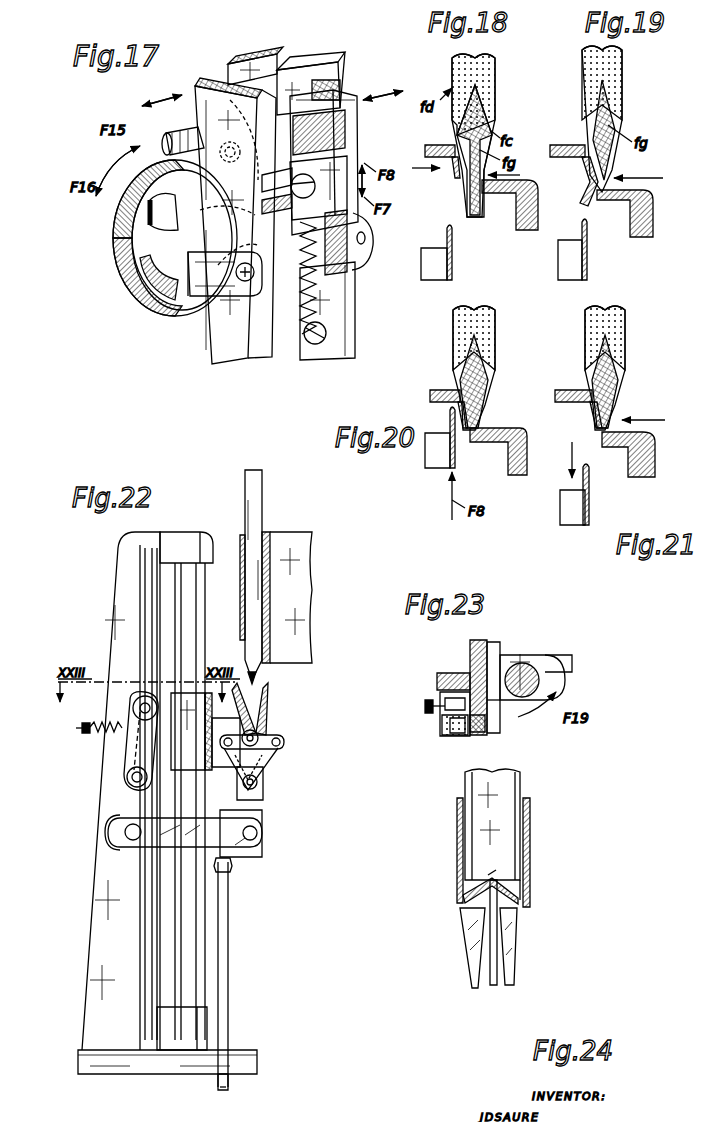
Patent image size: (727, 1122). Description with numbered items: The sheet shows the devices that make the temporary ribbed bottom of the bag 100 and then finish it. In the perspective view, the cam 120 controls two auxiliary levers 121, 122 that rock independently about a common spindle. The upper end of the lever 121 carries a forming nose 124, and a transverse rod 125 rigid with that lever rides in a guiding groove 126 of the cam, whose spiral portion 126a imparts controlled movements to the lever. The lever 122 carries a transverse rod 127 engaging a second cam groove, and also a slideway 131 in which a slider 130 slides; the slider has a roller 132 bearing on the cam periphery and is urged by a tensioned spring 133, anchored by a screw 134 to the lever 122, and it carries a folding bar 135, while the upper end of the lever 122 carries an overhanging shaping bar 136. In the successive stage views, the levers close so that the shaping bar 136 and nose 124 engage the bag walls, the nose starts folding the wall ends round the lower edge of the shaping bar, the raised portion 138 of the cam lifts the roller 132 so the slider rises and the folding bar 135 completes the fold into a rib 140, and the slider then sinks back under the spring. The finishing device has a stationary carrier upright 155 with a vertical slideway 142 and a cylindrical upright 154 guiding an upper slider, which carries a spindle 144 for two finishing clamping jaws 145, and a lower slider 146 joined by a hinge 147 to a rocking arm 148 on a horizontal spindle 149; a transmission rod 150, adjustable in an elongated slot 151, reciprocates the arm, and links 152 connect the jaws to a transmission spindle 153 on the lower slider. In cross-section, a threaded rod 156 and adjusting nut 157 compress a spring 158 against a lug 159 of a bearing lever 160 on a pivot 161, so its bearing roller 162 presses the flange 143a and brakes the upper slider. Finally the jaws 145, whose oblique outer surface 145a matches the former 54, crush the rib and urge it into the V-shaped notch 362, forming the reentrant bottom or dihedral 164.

In FIG. 17, the cam 120 is at (196, 322).
In FIG. 17, the lever 121 is at (213, 363).
In FIG. 17, the lever 122 is at (333, 343).
In FIG. 17, the forming nose 124 is at (260, 102).
In FIG. 18, the forming nose 124 is at (505, 195).
In FIG. 20, the forming nose 124 is at (505, 425).
In FIG. 17, the transverse rod 125 is at (150, 297).
In FIG. 17, the guiding groove 126 is at (175, 307).
In FIG. 17, the spiral portion 126a is at (150, 252).
In FIG. 17, the transverse rod 127 is at (278, 220).
In FIG. 17, the slider 130 is at (344, 153).
In FIG. 17, the slideway 131 is at (353, 132).
In FIG. 17, the roller 132 is at (173, 131).
In FIG. 17, the tensioned spring 133 is at (327, 293).
In FIG. 17, the screw 134 is at (313, 344).
In FIG. 18, the folding bar 135 is at (452, 238).
In FIG. 19, the folding bar 135 is at (588, 234).
In FIG. 20, the folding bar 135 is at (456, 458).
In FIG. 21, the folding bar 135 is at (590, 462).
In FIG. 17, the shaping bar 136 is at (232, 65).
In FIG. 18, the shaping bar 136 is at (455, 172).
In FIG. 19, the shaping bar 136 is at (588, 163).
In FIG. 20, the shaping bar 136 is at (455, 396).
In FIG. 21, the shaping bar 136 is at (585, 396).
In FIG. 17, the raised portion 138 is at (113, 237).
In FIG. 21, the rib 140 is at (590, 416).
In FIG. 22, the rib 140 is at (258, 682).
In FIG. 24, the rib 140 is at (463, 895).
In FIG. 22, the vertical slideway 142 is at (150, 610).
In FIG. 23, the vertical slideway 142 is at (468, 678).
In FIG. 23, the flange 143a is at (500, 730).
In FIG. 22, the spindle 144 is at (282, 736).
In FIG. 22, the finishing clamping jaws 145 is at (264, 710).
In FIG. 24, the finishing clamping jaws 145 is at (507, 972).
In FIG. 24, the front or outer surface 145a is at (498, 924).
In FIG. 22, the lower slider 146 is at (196, 788).
In FIG. 22, the hinge 147 is at (262, 832).
In FIG. 22, the rocking arm 148 is at (118, 846).
In FIG. 22, the horizontal spindle 149 is at (125, 830).
In FIG. 22, the transmission rod 150 is at (226, 905).
In FIG. 22, the elongated slot 151 is at (232, 866).
In FIG. 22, the links 152 is at (262, 766).
In FIG. 22, the transmission spindle 153 is at (258, 788).
In FIG. 22, the cylindrical upright 154 is at (192, 592).
In FIG. 23, the cylindrical upright 154 is at (522, 662).
In FIG. 22, the carrier upright 155 is at (125, 548).
In FIG. 23, the threaded rod 156 is at (445, 697).
In FIG. 22, the adjusting nut 157 is at (82, 727).
In FIG. 23, the adjusting nut 157 is at (425, 707).
In FIG. 22, the spring 158 is at (102, 732).
In FIG. 23, the spring 158 is at (440, 720).
In FIG. 23, the lug 159 is at (442, 735).
In FIG. 22, the bearing lever 160 is at (126, 770).
In FIG. 23, the bearing lever 160 is at (462, 738).
In FIG. 22, the pivot 161 is at (130, 787).
In FIG. 22, the bearing roller 162 is at (135, 706).
In FIG. 23, the bearing roller 162 is at (478, 735).
In FIG. 22, the reentrant bottom or dihedral 164 is at (276, 597).
In FIG. 24, the reentrant bottom or dihedral 164 is at (520, 894).
In FIG. 22, the bag 100 is at (262, 505).
In FIG. 24, the bag 100 is at (530, 824).
In FIG. 24, the former 54 is at (505, 792).
In FIG. 24, the V-shaped notch 362 is at (490, 874).